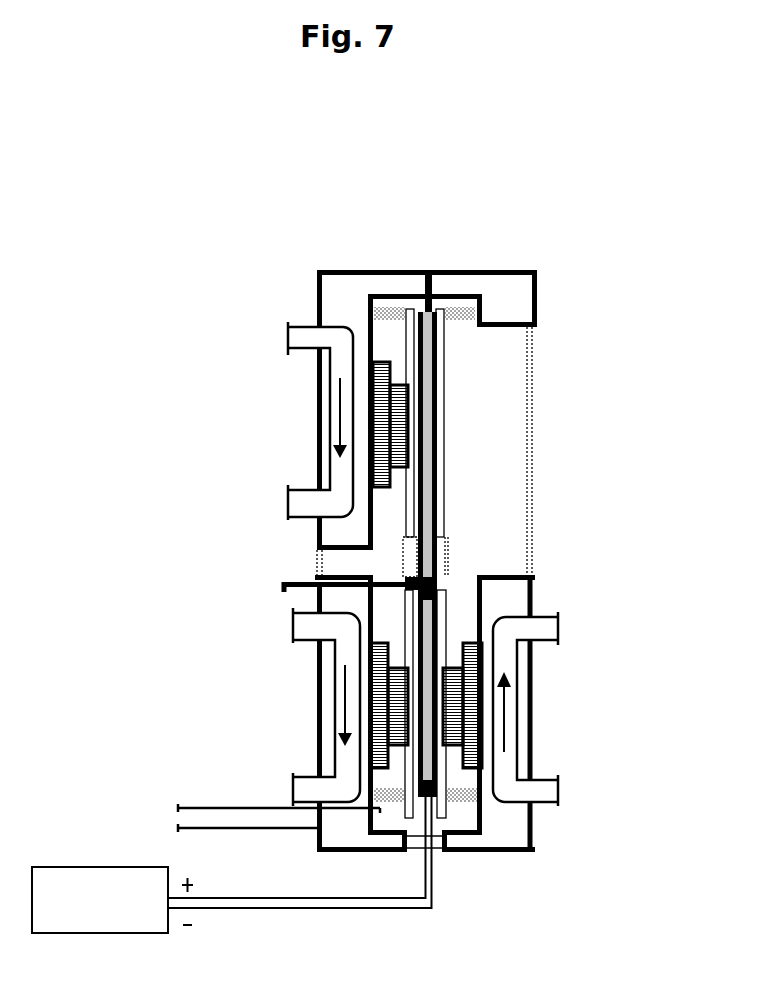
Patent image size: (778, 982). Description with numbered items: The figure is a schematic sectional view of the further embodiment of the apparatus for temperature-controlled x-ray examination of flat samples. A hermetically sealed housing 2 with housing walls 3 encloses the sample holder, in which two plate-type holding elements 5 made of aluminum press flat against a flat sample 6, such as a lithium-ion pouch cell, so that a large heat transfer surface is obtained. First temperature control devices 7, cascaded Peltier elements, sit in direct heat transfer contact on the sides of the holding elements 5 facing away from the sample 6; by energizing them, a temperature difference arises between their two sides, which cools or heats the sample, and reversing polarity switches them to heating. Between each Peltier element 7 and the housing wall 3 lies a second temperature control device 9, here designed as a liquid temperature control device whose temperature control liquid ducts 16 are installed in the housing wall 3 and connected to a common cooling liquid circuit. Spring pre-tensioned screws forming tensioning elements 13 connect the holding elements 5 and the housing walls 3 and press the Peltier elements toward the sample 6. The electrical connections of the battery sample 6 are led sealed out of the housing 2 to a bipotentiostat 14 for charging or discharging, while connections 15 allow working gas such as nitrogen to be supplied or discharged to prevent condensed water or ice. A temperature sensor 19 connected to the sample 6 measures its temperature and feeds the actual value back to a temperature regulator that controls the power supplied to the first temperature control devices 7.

The housing 2 is at (423, 517).
The housing wall 3 is at (317, 310).
The plate-type holding element 5 is at (408, 310).
The flat sample 6 is at (427, 310).
The first temperature control device 7 is at (375, 432).
The second temperature control device 9 is at (300, 338).
The tensioning element 13 is at (383, 310).
The bipotentiostat 14 is at (103, 883).
The connection 15 is at (200, 818).
The temperature control liquid duct 16 is at (340, 473).
The temperature sensor 19 is at (282, 587).